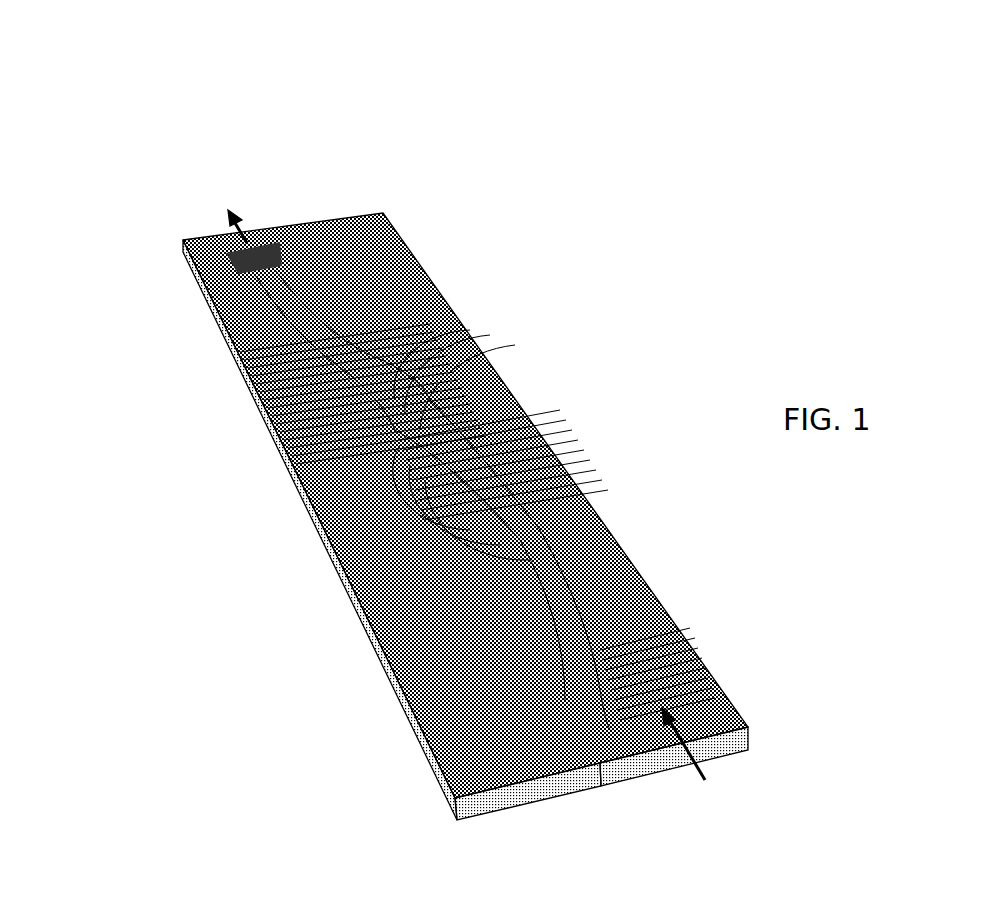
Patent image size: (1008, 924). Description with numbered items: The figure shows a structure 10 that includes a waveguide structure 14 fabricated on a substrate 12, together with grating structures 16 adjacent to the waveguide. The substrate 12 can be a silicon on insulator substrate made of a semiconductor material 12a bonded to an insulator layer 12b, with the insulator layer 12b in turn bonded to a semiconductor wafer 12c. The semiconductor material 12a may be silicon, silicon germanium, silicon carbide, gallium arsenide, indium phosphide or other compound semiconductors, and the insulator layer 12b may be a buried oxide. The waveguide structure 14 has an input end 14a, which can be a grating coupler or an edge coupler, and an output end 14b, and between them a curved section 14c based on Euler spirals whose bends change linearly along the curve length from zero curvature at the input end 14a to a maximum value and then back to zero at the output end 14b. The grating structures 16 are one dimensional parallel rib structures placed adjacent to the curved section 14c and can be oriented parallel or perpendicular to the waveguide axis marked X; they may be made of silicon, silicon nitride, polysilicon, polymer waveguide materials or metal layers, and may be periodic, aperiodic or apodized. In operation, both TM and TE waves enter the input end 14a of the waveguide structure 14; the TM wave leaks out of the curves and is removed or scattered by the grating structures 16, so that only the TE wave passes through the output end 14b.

The structure 10 is at (128, 117).
The substrate 12 is at (763, 724).
The semiconductor material 12a is at (377, 632).
The insulator layer 12b is at (517, 790).
The semiconductor wafer 12c is at (595, 778).
The waveguide structure 14 is at (370, 574).
The input end 14a is at (655, 665).
The output end 14b is at (293, 245).
The curved section 14c is at (412, 352).
The grating structures 16 is at (278, 412).